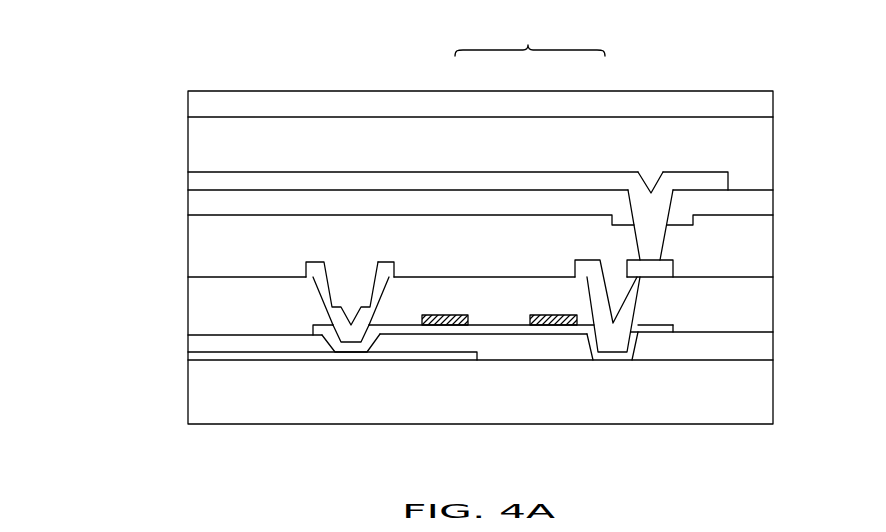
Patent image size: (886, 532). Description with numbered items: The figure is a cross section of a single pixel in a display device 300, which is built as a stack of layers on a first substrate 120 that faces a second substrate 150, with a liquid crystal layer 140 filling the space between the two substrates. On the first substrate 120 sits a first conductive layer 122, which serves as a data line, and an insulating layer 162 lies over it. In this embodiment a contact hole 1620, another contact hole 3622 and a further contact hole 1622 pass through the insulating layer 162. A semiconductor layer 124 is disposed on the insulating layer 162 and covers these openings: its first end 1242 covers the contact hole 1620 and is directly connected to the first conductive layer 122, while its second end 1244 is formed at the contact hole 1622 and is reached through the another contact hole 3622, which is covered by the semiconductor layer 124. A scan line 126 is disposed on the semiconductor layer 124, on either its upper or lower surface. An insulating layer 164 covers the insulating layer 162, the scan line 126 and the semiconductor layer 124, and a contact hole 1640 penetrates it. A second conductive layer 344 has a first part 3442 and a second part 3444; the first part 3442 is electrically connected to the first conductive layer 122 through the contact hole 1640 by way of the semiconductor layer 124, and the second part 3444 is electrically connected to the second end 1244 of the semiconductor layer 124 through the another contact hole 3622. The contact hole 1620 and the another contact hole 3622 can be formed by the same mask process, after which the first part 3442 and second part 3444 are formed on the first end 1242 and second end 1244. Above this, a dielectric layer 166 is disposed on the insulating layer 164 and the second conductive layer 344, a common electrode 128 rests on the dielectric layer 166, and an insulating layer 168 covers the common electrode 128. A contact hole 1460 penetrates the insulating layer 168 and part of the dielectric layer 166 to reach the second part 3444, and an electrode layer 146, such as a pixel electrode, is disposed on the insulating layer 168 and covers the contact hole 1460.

The display device 300 is at (110, 44).
The second conductive layer 344 is at (530, 40).
The first part 3442 is at (388, 272).
The second part 3444 is at (635, 270).
The second substrate 150 is at (196, 107).
The liquid crystal layer 140 is at (187, 147).
The electrode layer 146 is at (197, 181).
The contact hole 1460 is at (688, 202).
The insulating layer 168 is at (195, 205).
The common electrode 128 is at (198, 223).
The dielectric layer 166 is at (203, 252).
The insulating layer 164 is at (197, 314).
The insulating layer 162 is at (197, 342).
The first conductive layer 122 is at (197, 358).
The first substrate 120 is at (205, 387).
The another contact hole 3622 is at (652, 311).
The semiconductor layer 124 is at (671, 318).
The second end 1244 is at (687, 331).
The contact hole 1640 is at (303, 299).
The contact hole 1620 is at (318, 338).
The first end 1242 is at (354, 362).
The scan line 126 is at (468, 322).
The contact hole 1622 is at (649, 351).